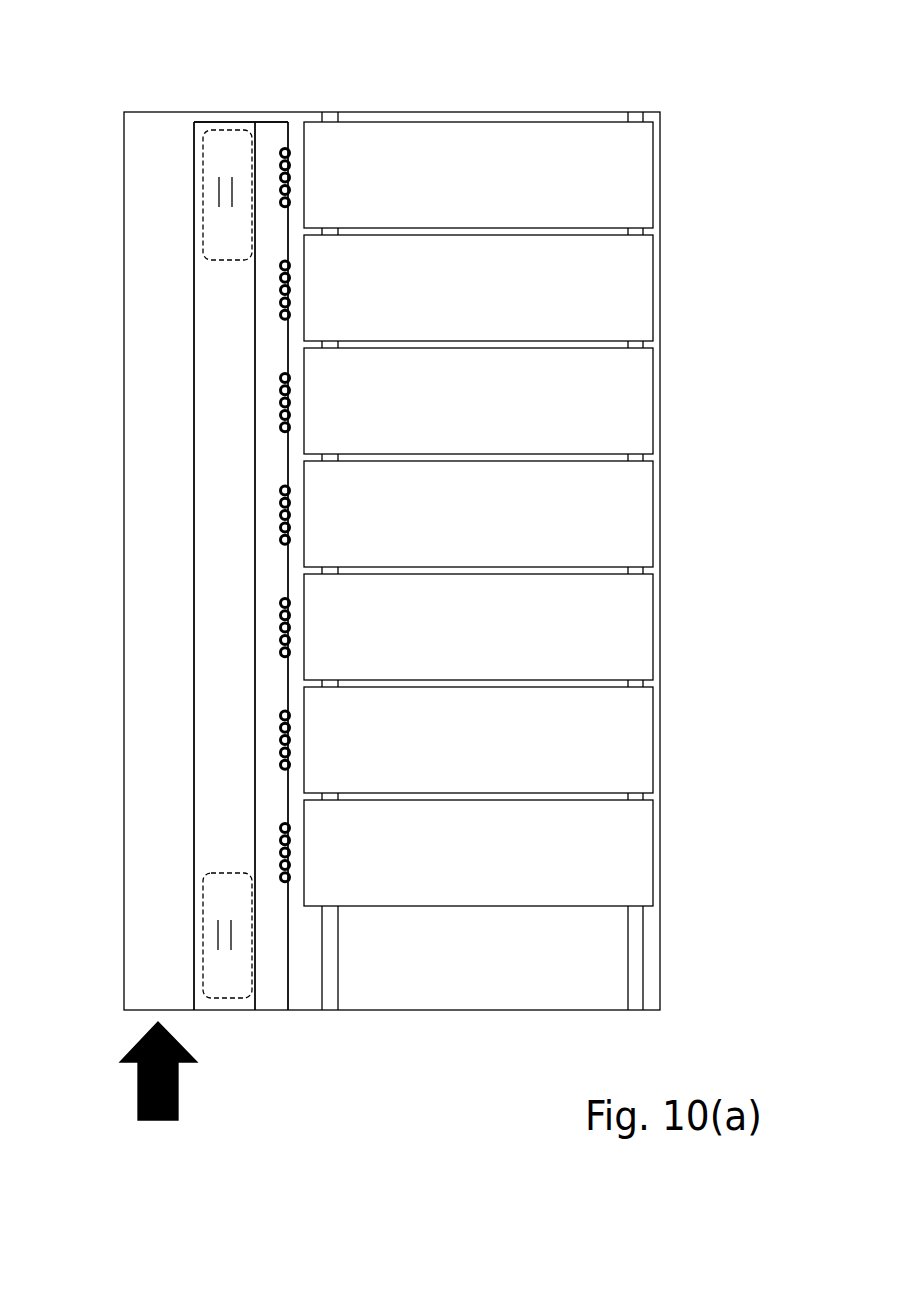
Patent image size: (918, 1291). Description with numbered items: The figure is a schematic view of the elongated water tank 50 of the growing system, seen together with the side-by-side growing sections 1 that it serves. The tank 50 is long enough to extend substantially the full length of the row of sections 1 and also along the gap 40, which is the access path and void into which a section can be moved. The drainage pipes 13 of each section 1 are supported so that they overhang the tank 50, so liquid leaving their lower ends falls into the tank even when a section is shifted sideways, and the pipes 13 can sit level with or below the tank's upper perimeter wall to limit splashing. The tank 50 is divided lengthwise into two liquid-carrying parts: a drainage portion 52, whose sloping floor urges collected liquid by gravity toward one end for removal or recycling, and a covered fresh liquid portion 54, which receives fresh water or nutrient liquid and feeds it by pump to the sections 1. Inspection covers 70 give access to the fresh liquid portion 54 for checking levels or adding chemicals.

The section 1 is at (630, 165).
The drainage pipes 13 is at (268, 128).
The gap 40 is at (610, 960).
The tank 50 is at (167, 505).
The drainage portion 52 is at (212, 496).
The fresh liquid portion 54 is at (263, 566).
The inspection covers 70 is at (228, 228).